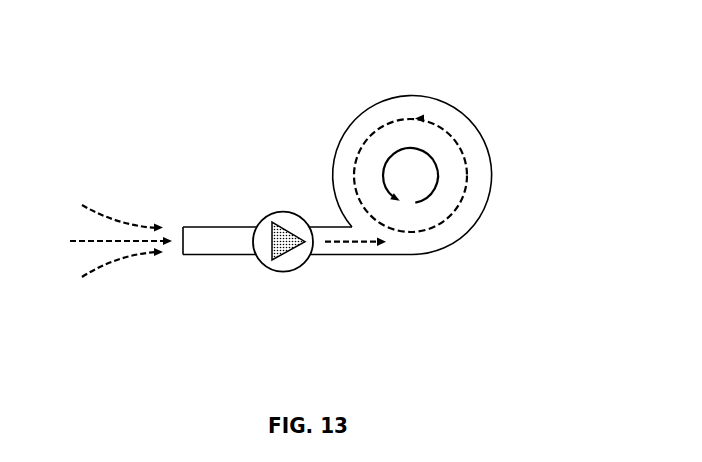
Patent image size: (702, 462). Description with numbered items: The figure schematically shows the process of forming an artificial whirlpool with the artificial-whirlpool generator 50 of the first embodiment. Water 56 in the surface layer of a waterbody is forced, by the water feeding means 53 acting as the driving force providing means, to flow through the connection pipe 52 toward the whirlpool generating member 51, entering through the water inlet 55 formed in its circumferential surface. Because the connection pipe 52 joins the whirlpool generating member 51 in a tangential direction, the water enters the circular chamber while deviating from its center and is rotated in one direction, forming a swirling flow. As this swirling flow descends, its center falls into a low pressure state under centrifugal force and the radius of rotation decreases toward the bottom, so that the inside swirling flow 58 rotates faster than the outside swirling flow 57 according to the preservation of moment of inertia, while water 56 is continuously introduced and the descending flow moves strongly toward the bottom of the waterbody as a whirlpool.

The artificial-whirlpool generator 50 is at (427, 146).
The whirlpool generating member 51 is at (397, 95).
The connection pipe 52 is at (320, 257).
The water feeding means 53 is at (286, 212).
The water inlet 55 is at (368, 247).
The water 56 is at (118, 220).
The outside swirling flow 57 is at (463, 200).
The inside swirling flow 58 is at (438, 170).